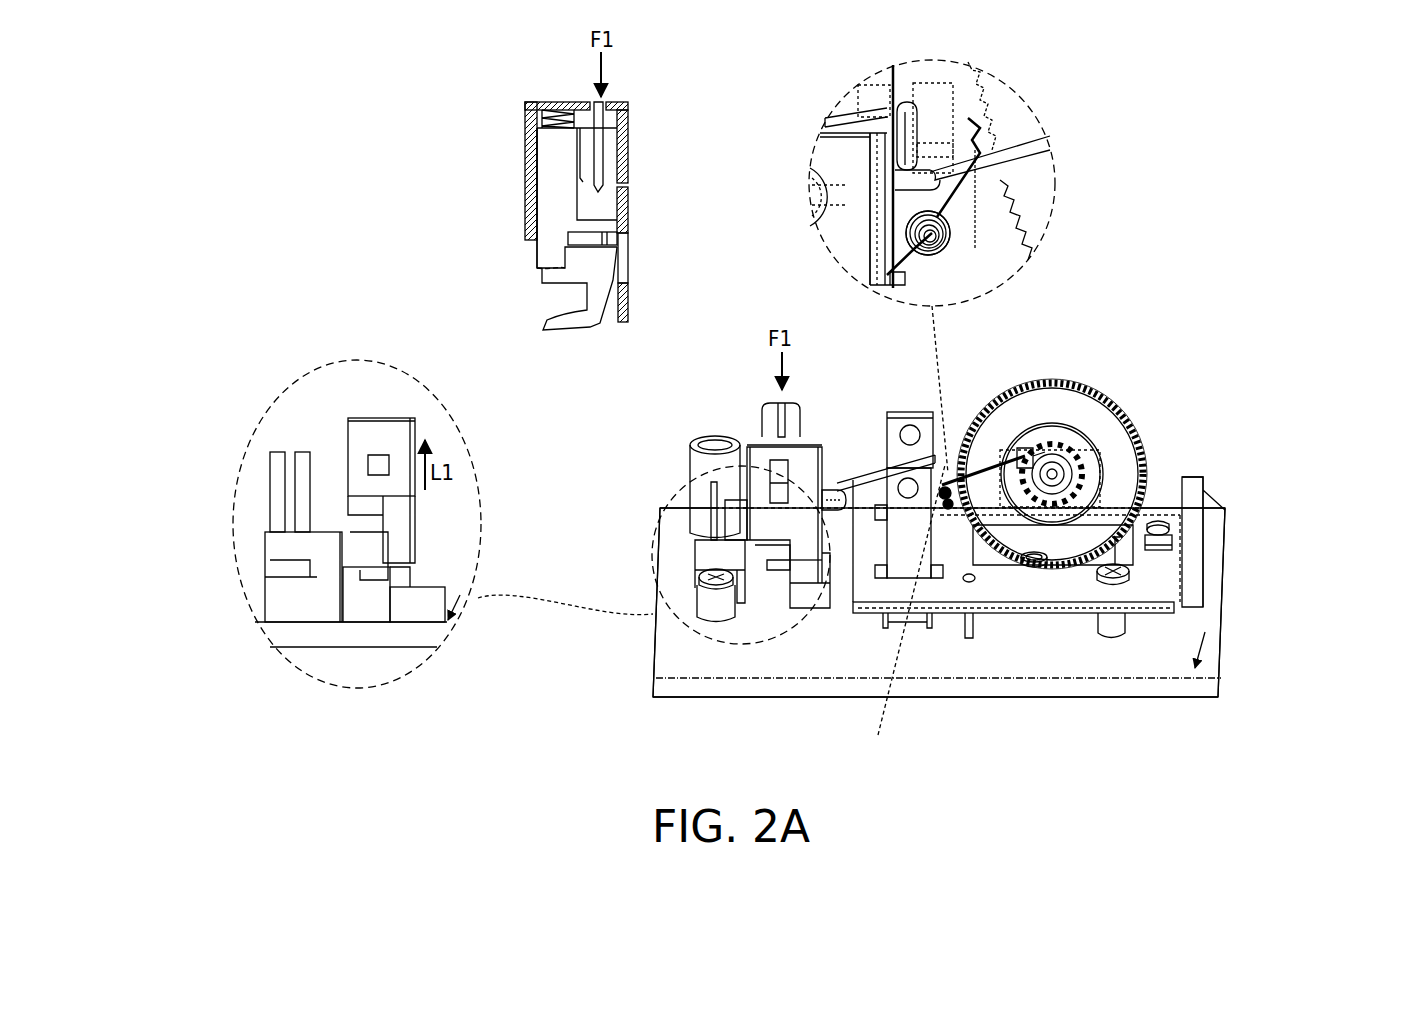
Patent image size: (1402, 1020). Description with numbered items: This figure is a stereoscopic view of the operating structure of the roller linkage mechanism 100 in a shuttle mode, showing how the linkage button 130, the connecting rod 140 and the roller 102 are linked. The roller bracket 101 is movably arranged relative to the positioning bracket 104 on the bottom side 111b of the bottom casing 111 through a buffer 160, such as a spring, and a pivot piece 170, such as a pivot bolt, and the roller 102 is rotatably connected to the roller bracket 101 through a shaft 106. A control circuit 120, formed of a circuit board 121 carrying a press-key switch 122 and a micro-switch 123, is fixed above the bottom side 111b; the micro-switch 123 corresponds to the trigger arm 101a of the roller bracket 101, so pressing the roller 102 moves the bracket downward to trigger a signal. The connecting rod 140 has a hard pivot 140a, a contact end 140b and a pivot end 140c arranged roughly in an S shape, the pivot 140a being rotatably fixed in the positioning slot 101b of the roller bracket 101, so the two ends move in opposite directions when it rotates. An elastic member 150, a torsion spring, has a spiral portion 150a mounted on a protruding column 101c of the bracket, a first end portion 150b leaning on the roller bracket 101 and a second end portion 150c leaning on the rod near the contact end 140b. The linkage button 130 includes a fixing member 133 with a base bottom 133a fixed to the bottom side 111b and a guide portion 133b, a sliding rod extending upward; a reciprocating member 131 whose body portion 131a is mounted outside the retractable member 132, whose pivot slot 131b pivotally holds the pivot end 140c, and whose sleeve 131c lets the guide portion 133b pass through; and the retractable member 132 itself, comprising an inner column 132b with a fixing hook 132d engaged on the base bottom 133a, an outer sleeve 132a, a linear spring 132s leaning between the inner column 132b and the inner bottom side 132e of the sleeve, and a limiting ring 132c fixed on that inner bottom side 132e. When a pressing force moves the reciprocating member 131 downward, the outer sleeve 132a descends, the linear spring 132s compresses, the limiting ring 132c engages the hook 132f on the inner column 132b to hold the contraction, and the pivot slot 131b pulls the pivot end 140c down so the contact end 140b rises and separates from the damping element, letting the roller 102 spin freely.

The roller linkage mechanism 100 is at (150, 64).
The roller bracket 101 is at (1313, 215).
The trigger arm 101a is at (1197, 548).
The positioning slot 101b is at (893, 72).
The protruding column 101c is at (880, 250).
The roller 102 is at (1068, 397).
The positioning bracket 104 is at (890, 425).
The shaft 106 is at (1082, 432).
The bottom casing 111 is at (1200, 694).
The bottom side 111b is at (1205, 632).
The control circuit 120 is at (1108, 737).
The circuit board 121 is at (1033, 614).
The press-key switch 122 is at (1032, 566).
The micro-switch 123 is at (1155, 553).
The linkage button 130 is at (553, 445).
The reciprocating member 131 is at (767, 418).
The body portion 131a is at (803, 573).
The pivot slot 131b is at (845, 590).
The sleeve 131c is at (735, 590).
The retractable member 132 is at (410, 125).
The outer sleeve 132a is at (525, 158).
The inner column 132b is at (562, 274).
The limiting ring 132c is at (590, 100).
The fixing hook 132d is at (573, 300).
The inner bottom side 132e is at (570, 240).
The hook 132f is at (604, 186).
The linear spring 132s is at (590, 112).
The fixing member 133 is at (700, 553).
The base bottom 133a is at (330, 607).
The guide portion 133b is at (270, 473).
The connecting rod 140 is at (1313, 325).
The pivot 140a is at (898, 118).
The contact end 140b is at (1033, 450).
The pivot end 140c is at (828, 490).
The elastic member 150 is at (1128, 200).
The spiral portion 150a is at (950, 236).
The first end portion 150b is at (905, 275).
The second end portion 150c is at (985, 162).
The buffer 160 is at (968, 584).
The pivot piece 170 is at (902, 617).